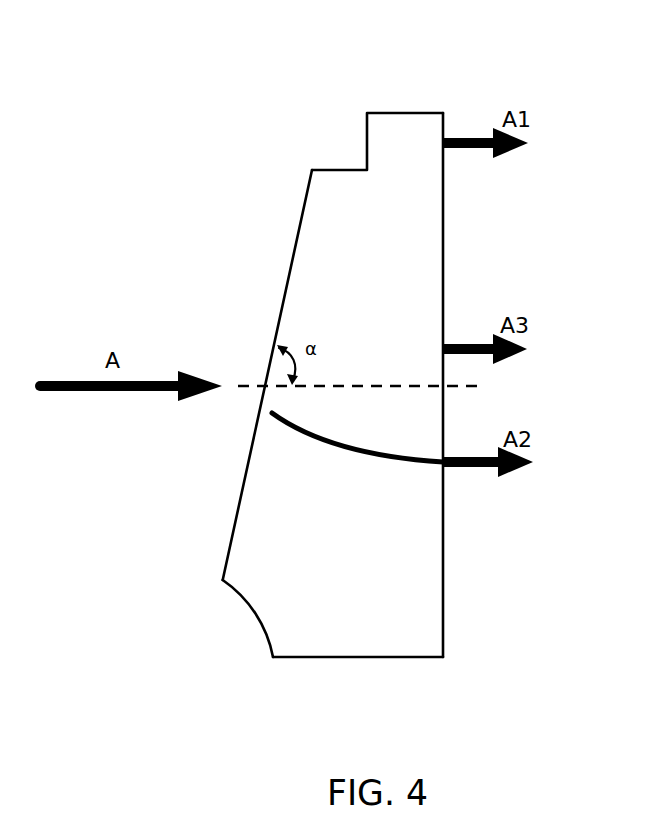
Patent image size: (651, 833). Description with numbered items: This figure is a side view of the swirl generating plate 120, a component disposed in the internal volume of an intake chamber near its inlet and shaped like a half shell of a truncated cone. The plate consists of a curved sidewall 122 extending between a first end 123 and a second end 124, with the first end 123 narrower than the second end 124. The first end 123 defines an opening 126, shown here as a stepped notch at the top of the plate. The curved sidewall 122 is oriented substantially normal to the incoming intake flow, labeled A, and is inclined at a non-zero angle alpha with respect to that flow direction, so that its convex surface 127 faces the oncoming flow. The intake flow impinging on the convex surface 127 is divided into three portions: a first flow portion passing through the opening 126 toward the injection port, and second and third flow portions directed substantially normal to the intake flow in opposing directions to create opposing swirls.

The swirl generating plate 120 is at (334, 59).
The curved sidewall 122 is at (292, 258).
The first end 123 is at (430, 128).
The second end 124 is at (428, 637).
The opening 126 is at (367, 127).
The convex surface 127 is at (283, 451).